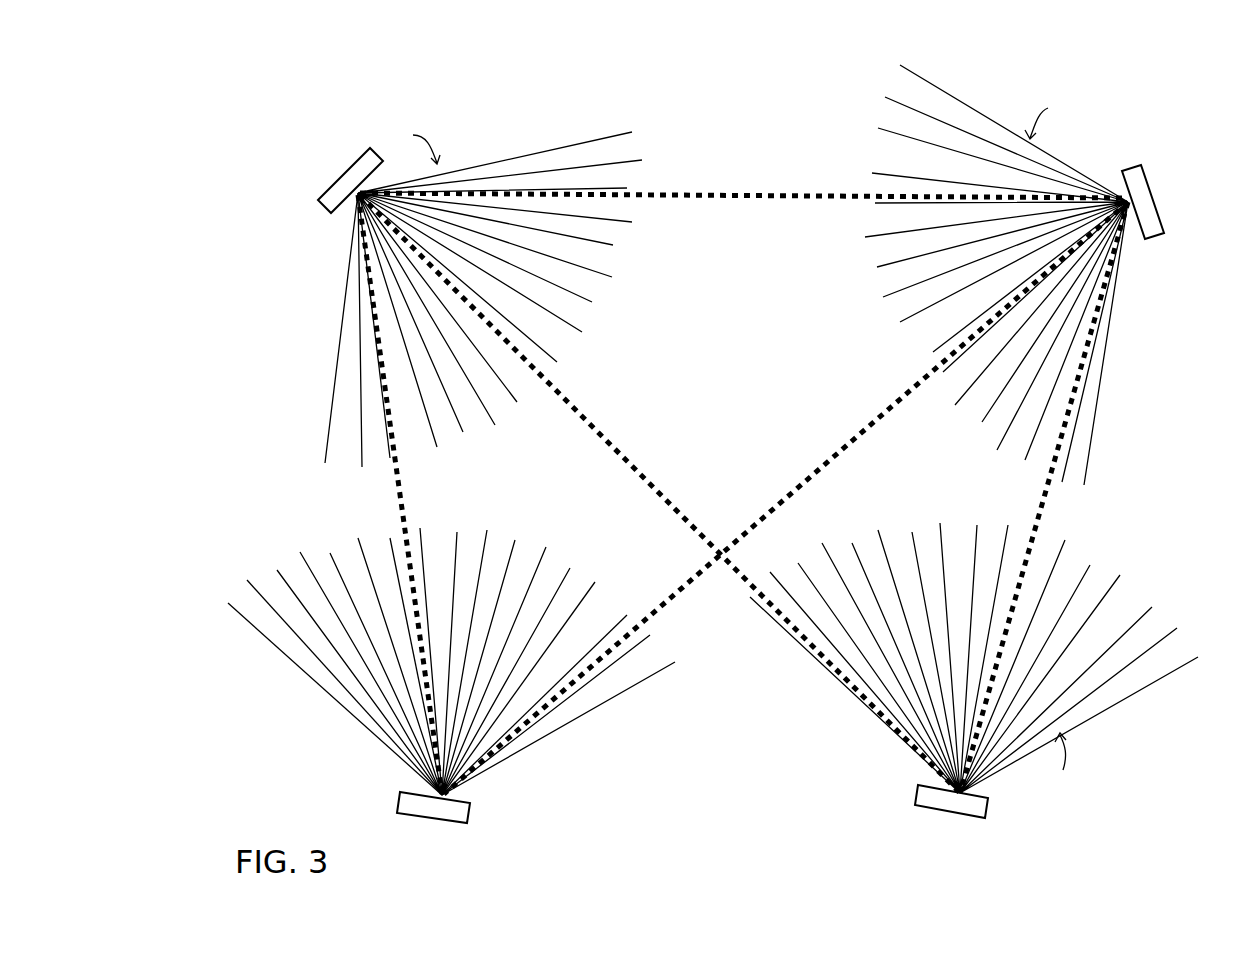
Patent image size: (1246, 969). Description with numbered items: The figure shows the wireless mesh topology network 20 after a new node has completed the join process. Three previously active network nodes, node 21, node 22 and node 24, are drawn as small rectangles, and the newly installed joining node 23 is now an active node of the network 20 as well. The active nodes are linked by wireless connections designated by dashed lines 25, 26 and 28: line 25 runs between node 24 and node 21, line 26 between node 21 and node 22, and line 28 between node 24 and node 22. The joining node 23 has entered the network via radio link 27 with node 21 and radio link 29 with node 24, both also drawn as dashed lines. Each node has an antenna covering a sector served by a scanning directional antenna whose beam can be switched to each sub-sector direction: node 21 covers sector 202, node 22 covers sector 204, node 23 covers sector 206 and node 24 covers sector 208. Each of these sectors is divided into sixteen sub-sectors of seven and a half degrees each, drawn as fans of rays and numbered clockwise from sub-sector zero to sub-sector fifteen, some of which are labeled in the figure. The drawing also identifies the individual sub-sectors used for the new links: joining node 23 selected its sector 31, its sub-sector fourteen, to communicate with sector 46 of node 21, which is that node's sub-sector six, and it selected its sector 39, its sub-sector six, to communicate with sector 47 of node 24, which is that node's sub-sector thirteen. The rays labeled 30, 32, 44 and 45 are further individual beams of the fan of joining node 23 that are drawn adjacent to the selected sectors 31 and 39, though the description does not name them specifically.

The wireless mesh topology network 20 is at (661, 787).
The network node 21 is at (1163, 233).
The network node 22 is at (988, 813).
The joining node 23 is at (469, 822).
The network node 24 is at (356, 162).
The dashed line (wireless connection) 25 is at (820, 194).
The dashed line (wireless connection) 26 is at (1037, 497).
The radio link 27 is at (868, 412).
The dashed line (wireless connection) 28 is at (648, 478).
The radio link 29 is at (397, 500).
The detection beam (15) of sensor 23 30 is at (636, 673).
The sector 31 is at (658, 600).
The detection beam (13) of sensor 23 32 is at (615, 590).
The sector 39 is at (408, 530).
The detection beam (1) of sensor 23 44 is at (275, 590).
The detection beam (0) of sensor 23 45 is at (243, 597).
The sector 46 is at (933, 353).
The sector 47 is at (405, 398).
The sector 202 is at (1039, 276).
The sector 204 is at (872, 728).
The sector 206 is at (451, 632).
The sector 208 is at (451, 303).